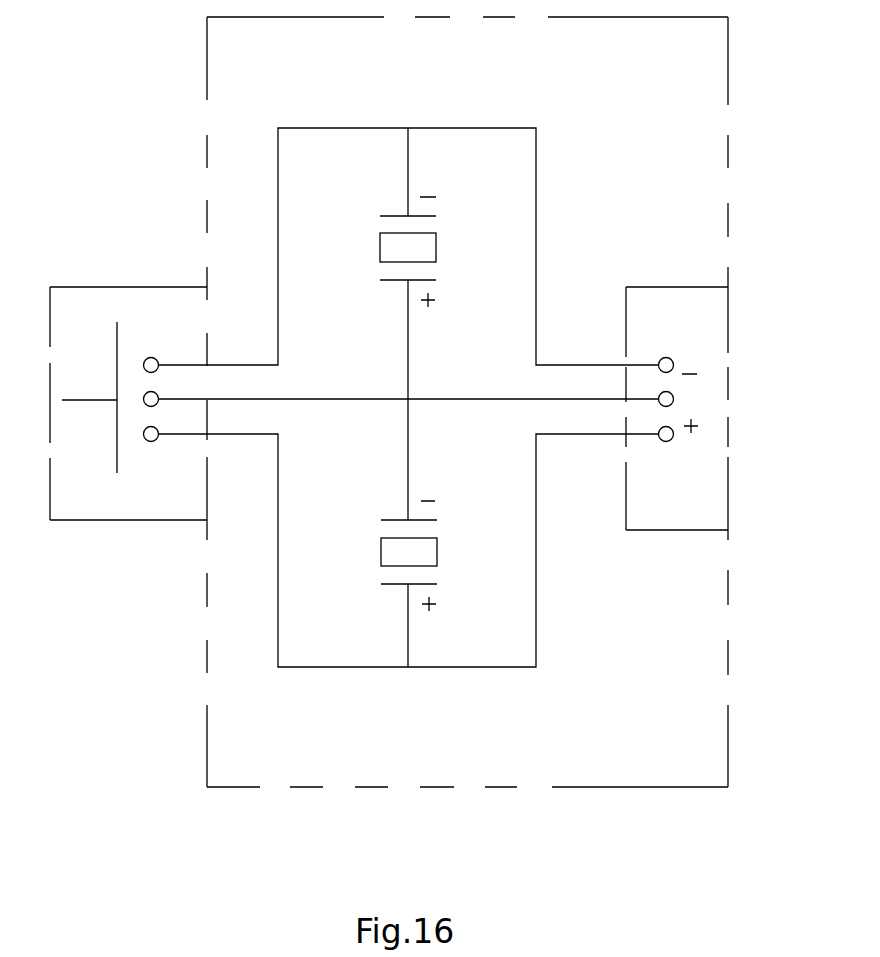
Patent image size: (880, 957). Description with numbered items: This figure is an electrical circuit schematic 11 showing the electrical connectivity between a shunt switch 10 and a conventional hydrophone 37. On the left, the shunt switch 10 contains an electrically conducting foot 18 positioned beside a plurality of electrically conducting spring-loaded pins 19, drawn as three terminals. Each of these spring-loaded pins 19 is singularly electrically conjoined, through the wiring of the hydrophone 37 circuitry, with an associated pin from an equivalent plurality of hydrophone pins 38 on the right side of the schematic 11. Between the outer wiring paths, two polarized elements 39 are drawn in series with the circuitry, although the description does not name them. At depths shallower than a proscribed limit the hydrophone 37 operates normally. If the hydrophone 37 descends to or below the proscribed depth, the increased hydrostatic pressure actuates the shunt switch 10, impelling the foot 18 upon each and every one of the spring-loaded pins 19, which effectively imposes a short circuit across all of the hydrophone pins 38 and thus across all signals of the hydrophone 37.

The shunt switch 10 is at (97, 287).
The electrical circuit schematic 11 is at (186, 630).
The foot 18 is at (116, 442).
The electrically conducting spring-loaded pins 19 is at (153, 357).
The conventional hydrophone 37 is at (443, 717).
The pins 38 is at (666, 356).
The battery 39 is at (438, 242).